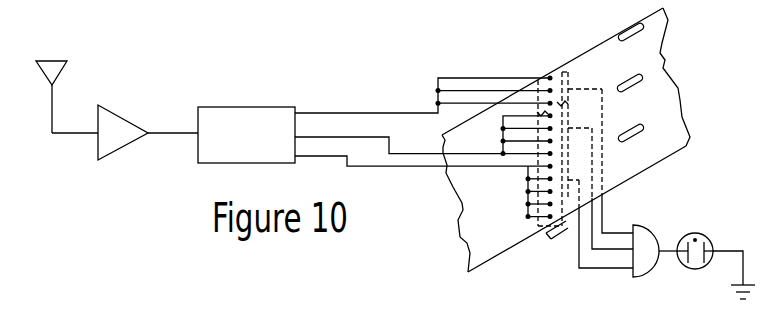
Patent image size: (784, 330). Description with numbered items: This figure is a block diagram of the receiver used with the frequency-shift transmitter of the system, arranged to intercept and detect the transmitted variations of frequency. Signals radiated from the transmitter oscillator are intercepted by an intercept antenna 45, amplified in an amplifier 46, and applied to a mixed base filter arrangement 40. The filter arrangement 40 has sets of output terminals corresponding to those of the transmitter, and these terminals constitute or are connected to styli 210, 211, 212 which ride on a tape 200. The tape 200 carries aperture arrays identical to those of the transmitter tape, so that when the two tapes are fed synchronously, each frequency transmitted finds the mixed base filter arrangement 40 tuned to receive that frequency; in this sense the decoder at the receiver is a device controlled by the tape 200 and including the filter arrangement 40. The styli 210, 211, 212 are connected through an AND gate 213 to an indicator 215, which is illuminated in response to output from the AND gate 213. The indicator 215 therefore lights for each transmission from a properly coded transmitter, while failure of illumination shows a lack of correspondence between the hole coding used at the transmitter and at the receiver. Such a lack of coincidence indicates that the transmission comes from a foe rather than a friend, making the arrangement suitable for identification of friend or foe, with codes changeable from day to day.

The intercept antenna 45 is at (64, 72).
The amplifier 46 is at (126, 116).
The mixed base filter arrangement 40 is at (249, 107).
The tape 200 is at (683, 101).
The stylus 210 is at (561, 72).
The stylus 211 is at (558, 127).
The stylus 212 is at (559, 231).
The AND gate 213 is at (632, 274).
The indicator 215 is at (704, 270).